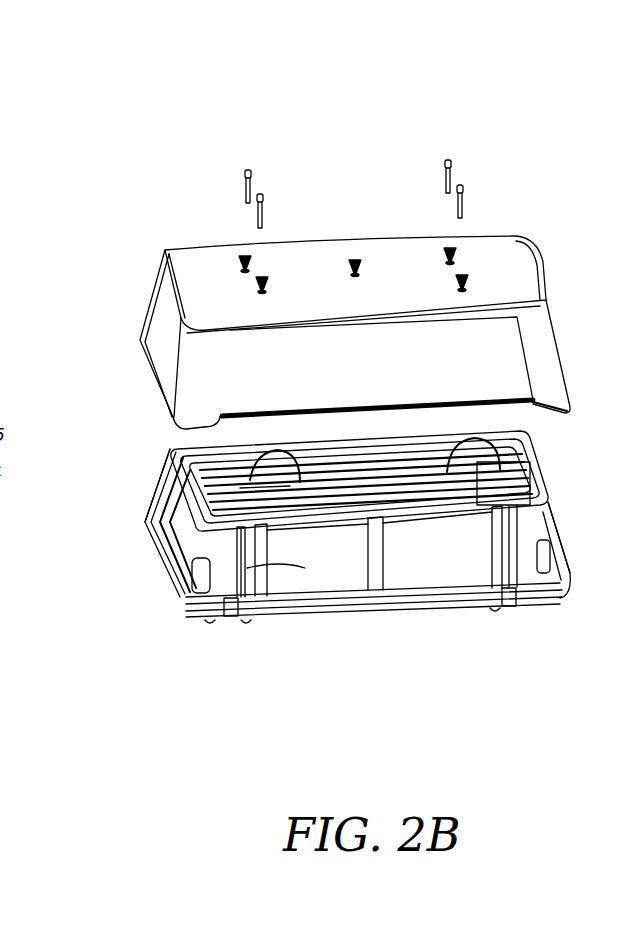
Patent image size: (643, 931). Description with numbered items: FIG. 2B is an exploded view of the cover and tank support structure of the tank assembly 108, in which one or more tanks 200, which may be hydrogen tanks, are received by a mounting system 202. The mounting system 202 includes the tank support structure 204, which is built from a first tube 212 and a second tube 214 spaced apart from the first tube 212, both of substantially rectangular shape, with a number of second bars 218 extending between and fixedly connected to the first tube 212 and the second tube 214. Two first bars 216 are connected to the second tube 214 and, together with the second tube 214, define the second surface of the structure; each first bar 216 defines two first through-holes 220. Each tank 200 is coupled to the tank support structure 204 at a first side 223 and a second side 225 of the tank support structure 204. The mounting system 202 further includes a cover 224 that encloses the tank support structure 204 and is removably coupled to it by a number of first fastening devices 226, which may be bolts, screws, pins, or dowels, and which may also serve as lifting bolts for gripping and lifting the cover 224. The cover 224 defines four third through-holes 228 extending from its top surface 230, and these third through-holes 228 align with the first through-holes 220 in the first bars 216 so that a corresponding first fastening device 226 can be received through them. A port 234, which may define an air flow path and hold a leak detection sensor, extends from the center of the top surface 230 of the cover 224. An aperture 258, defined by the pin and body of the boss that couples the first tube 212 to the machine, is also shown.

The tank assembly 108 is at (118, 156).
The tank 200 is at (463, 577).
The mounting system 202 is at (310, 633).
The tank support structure 204 is at (163, 596).
The first tube 212 is at (440, 603).
The second tube 214 is at (530, 515).
The first bar 216 is at (480, 472).
The second bar 218 is at (510, 542).
The first through-hole 220 is at (263, 485).
The first side 223 is at (597, 558).
The cover 224 is at (510, 357).
The second side 225 is at (142, 566).
The first fastening device 226 is at (252, 178).
The third through-hole 228 is at (260, 276).
The top surface 230 is at (530, 270).
The port 234 is at (360, 258).
The aperture 258 is at (230, 603).